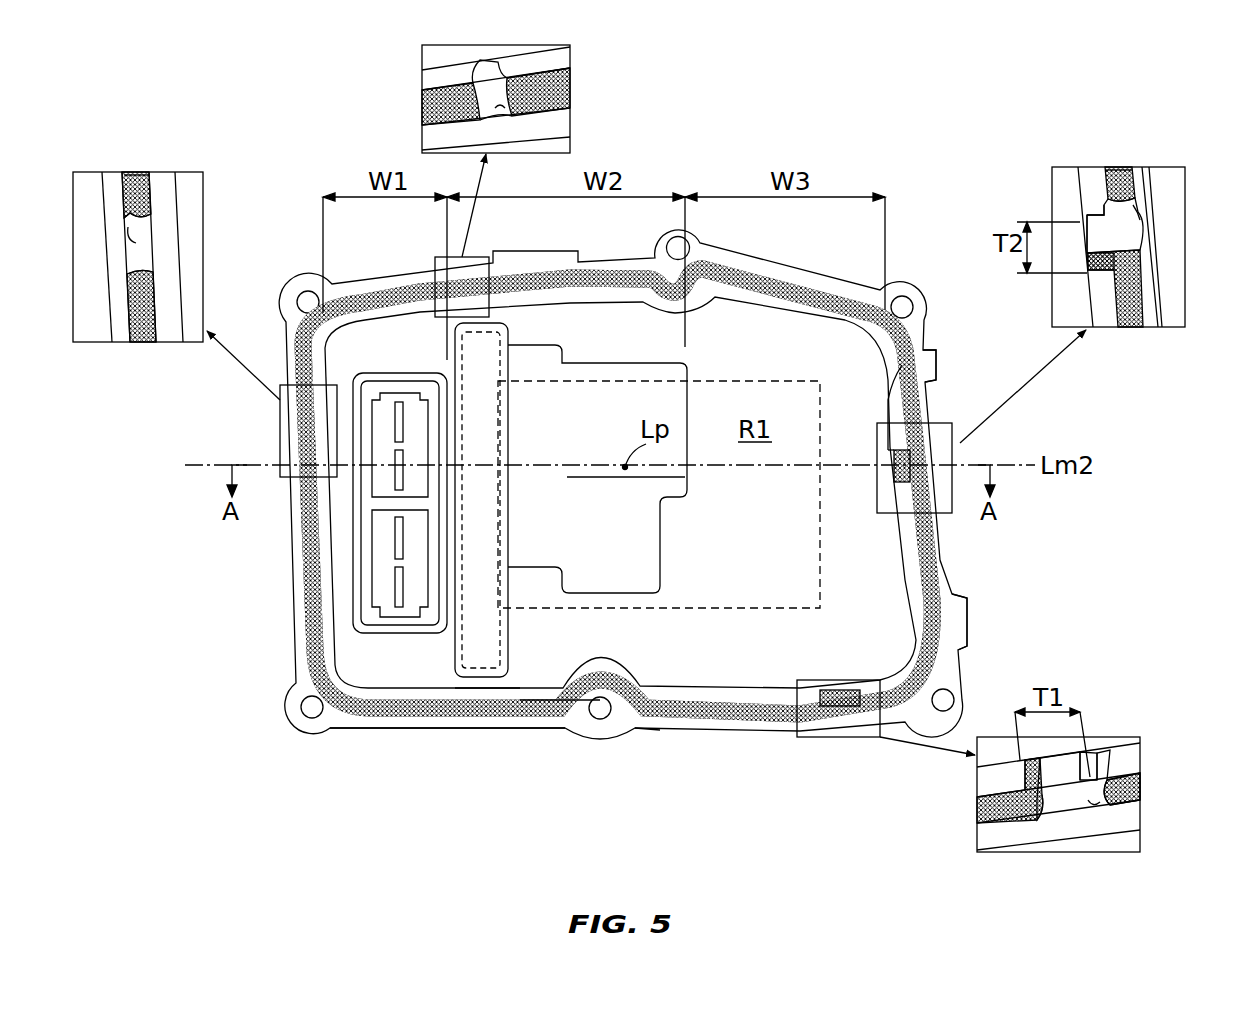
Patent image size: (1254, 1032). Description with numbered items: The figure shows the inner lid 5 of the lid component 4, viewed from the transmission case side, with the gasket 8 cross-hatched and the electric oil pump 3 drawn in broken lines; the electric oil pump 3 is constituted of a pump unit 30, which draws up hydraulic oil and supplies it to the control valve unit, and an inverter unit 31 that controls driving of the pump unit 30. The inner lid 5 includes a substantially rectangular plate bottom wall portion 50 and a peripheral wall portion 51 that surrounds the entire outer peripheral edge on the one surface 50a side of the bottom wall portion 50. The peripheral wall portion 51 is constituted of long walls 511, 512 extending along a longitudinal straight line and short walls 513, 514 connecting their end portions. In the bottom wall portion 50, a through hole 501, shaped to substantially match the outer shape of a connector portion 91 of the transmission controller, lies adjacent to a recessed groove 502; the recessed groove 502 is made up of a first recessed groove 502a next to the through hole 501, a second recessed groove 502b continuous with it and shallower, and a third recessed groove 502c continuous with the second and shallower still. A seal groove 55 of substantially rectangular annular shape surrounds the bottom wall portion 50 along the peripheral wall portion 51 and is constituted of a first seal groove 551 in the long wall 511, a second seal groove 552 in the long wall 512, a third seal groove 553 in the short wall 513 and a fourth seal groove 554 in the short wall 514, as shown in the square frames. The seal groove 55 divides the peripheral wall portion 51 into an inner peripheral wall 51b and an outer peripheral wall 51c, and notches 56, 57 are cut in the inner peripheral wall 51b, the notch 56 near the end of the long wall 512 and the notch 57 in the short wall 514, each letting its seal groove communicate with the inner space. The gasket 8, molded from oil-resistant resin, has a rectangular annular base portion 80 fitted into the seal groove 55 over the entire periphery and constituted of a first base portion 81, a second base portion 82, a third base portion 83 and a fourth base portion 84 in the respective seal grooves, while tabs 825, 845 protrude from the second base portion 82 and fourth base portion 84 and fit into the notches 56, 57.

The electric oil pump 3 is at (748, 378).
The lid component 4 is at (935, 195).
The inner lid 5 is at (288, 270).
The gasket 8 is at (933, 312).
The pump unit 30 is at (823, 586).
The inverter unit 31 is at (455, 723).
The bottom wall portion 50 is at (752, 642).
The one surface 50a is at (940, 620).
The peripheral wall portion 51 is at (945, 560).
The inner peripheral wall 51b is at (165, 315).
The outer peripheral wall 51c is at (120, 313).
The seal groove 55 is at (142, 256).
The notch 56 is at (1097, 760).
The notch 57 is at (1085, 218).
The base portion 80 is at (925, 405).
The first base portion 81 is at (565, 92).
The second base portion 82 is at (1115, 790).
The third base portion 83 is at (138, 172).
The fourth base portion 84 is at (1118, 168).
The connector portion 91 is at (352, 550).
The through hole 501 is at (394, 632).
The recessed groove 502 is at (654, 812).
The first recessed groove 502a is at (483, 655).
The second recessed groove 502b is at (537, 545).
The third recessed groove 502c is at (630, 650).
The long wall 511 is at (600, 307).
The long wall 512 is at (673, 696).
The short wall 513 is at (330, 378).
The short wall 514 is at (890, 400).
The first seal groove 551 is at (505, 112).
The second seal groove 552 is at (1093, 805).
The third seal groove 553 is at (135, 242).
The fourth seal groove 554 is at (1133, 208).
The tab 825 is at (837, 690).
The tab 845 is at (897, 482).